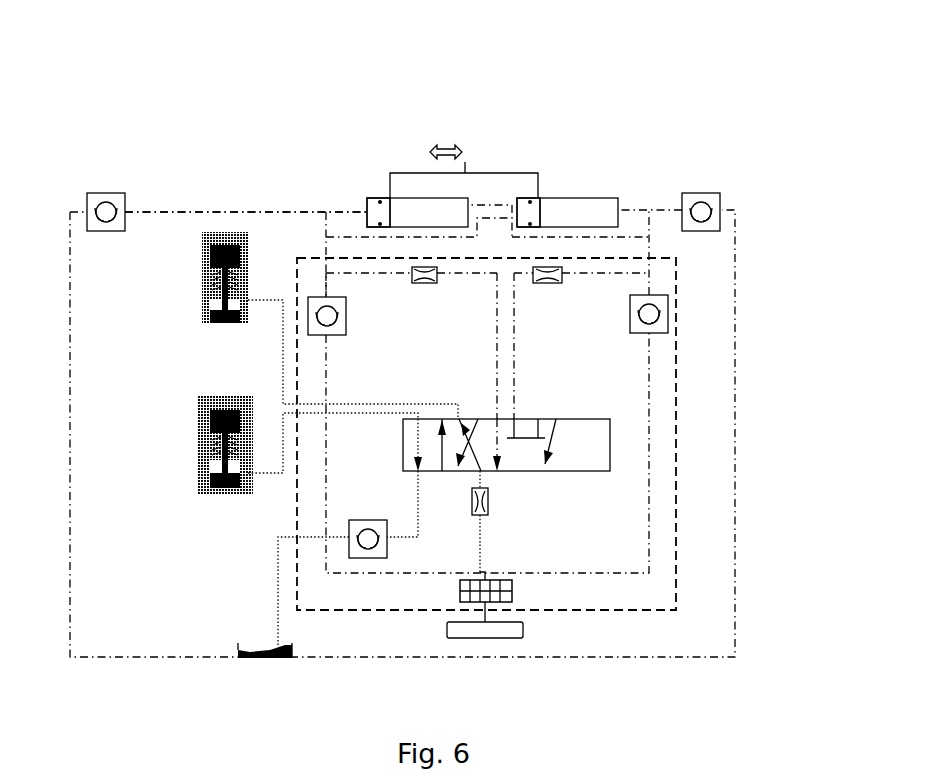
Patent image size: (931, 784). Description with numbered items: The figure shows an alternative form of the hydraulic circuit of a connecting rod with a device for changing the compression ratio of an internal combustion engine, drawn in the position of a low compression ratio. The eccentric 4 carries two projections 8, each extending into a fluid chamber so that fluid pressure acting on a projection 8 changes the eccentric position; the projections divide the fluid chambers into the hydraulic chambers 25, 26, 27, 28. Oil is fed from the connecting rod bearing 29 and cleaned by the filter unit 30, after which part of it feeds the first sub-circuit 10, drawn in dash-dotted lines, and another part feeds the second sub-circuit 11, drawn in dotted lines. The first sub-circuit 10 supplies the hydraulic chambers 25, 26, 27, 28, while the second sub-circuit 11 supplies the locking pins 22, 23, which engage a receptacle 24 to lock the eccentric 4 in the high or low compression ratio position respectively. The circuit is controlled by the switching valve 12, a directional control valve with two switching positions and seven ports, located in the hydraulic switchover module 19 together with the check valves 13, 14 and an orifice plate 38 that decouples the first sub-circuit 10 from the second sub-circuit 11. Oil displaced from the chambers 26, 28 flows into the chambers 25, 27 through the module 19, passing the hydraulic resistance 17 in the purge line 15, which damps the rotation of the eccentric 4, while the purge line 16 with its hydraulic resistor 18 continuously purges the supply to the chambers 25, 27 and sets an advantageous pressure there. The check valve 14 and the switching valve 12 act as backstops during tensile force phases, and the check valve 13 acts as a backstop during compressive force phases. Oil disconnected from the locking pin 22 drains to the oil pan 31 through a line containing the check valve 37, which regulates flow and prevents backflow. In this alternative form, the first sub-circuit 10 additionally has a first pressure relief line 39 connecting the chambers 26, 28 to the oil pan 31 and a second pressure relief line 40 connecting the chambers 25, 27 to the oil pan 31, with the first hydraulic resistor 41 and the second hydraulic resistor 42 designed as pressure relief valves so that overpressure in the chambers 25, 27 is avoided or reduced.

The eccentric 4 is at (203, 237).
The projection 8 is at (372, 198).
The first sub-circuit 10 is at (650, 455).
The second sub-circuit 11 is at (283, 475).
The switching valve 12 is at (610, 445).
The check valve 13 is at (345, 315).
The check valve 14 is at (667, 313).
The purge line 15 is at (382, 257).
The purge line 16 is at (600, 276).
The hydraulic resistance 17 is at (427, 283).
The hydraulic resistor 18 is at (547, 283).
The hydraulic switchover module 19 is at (676, 522).
The locking pin 22 is at (203, 278).
The locking pin 23 is at (203, 463).
The receptacle 24 is at (213, 407).
The hydraulic chamber 25 is at (423, 212).
The hydraulic chamber 26 is at (520, 198).
The hydraulic chamber 27 is at (613, 200).
The hydraulic chamber 28 is at (368, 202).
The connecting rod bearing 29 is at (523, 630).
The filter unit 30 is at (512, 590).
The oil pan 31 is at (238, 643).
The check valve 37 is at (368, 557).
The orifice plate 38 is at (488, 500).
The first pressure relief line 39 is at (207, 212).
The second pressure relief line 40 is at (737, 240).
The first hydraulic resistor 41 is at (104, 193).
The second hydraulic resistor 42 is at (700, 193).